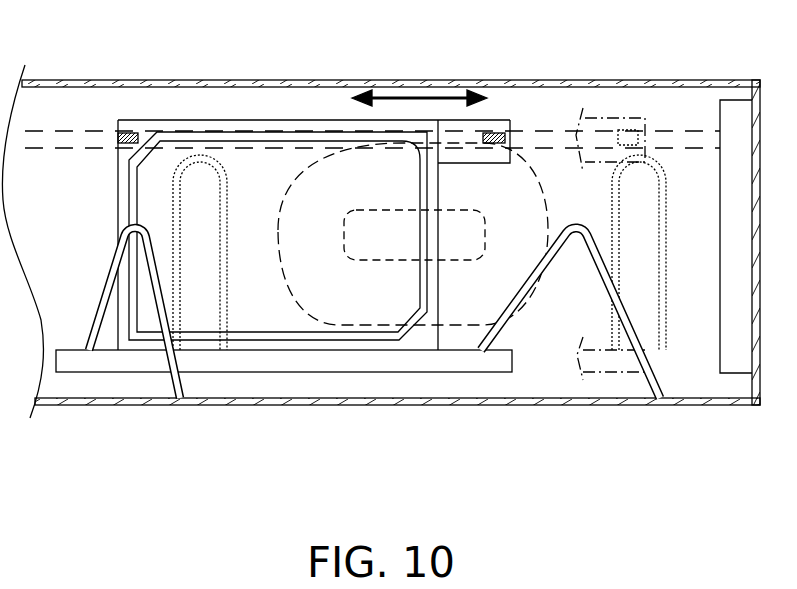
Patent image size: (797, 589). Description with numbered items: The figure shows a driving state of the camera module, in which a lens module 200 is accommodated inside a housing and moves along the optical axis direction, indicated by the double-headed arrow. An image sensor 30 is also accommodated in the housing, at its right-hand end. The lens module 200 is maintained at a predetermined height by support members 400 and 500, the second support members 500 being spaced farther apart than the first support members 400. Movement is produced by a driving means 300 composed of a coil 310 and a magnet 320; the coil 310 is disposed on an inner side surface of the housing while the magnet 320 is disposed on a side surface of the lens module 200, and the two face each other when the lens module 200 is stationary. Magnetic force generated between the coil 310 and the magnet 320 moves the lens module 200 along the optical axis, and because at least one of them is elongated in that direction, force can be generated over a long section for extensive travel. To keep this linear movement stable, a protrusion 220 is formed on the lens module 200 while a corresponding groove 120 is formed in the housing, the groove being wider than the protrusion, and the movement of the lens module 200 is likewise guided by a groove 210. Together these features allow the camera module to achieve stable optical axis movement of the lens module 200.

The groove 120 is at (58, 140).
The protrusion 220 is at (131, 133).
The lens module 200 is at (332, 120).
The groove 210 is at (497, 133).
The image sensor 30 is at (737, 115).
The first support member 400 is at (97, 327).
The second support member 500 is at (168, 380).
The magnet 320 is at (286, 325).
The coil 310 is at (386, 322).
The driving means 300 is at (400, 478).